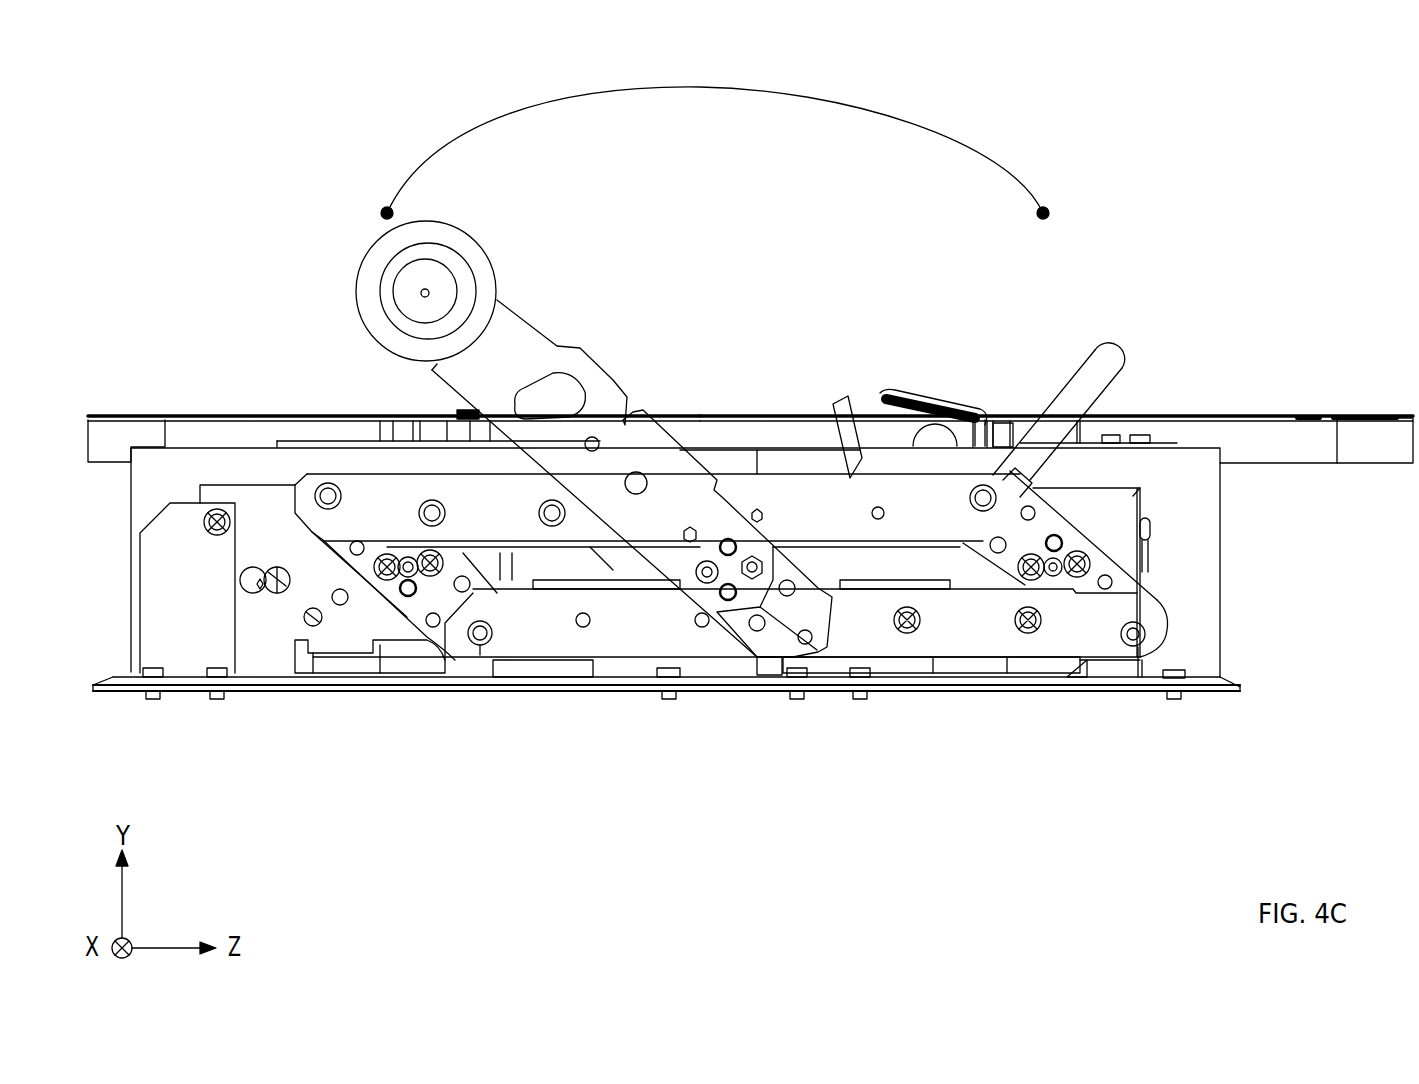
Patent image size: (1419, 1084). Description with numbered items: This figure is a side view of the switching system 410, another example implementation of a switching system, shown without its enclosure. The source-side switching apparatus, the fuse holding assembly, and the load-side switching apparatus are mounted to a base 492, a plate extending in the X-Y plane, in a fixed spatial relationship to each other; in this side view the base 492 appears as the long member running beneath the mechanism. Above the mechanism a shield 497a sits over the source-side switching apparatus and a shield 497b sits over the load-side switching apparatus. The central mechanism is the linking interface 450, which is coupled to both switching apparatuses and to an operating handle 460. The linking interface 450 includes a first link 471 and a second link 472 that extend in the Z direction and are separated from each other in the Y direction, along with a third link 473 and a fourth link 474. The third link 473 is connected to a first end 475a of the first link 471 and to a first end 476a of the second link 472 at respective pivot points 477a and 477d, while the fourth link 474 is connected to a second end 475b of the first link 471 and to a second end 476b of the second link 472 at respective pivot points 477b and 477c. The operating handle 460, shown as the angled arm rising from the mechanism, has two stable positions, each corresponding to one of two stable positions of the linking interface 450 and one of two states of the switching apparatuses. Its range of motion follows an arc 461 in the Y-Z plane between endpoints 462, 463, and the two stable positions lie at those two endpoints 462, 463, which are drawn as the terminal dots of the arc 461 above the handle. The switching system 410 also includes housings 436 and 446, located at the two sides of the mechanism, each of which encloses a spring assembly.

The switching system 410 is at (1332, 225).
The housing 436 is at (1123, 503).
The housing 446 is at (281, 605).
The linking interface 450 is at (728, 665).
The operating handle 460 is at (582, 372).
The arc 461 is at (621, 76).
The endpoint 462 is at (1043, 233).
The endpoint 463 is at (370, 200).
The first link 471 is at (762, 488).
The second link 472 is at (952, 627).
The third link 473 is at (422, 605).
The fourth link 474 is at (1113, 570).
The first end of the first link 475a is at (303, 493).
The second end of the first link 475b is at (1003, 502).
The first end of the second link 476a is at (463, 645).
The second end of the second link 476b is at (1162, 632).
The pivot point 477a is at (327, 486).
The pivot point 477b is at (982, 495).
The pivot point 477c is at (1132, 640).
The pivot point 477d is at (487, 640).
The base 492 is at (1223, 680).
The shield 497a is at (1395, 415).
The shield 497b is at (233, 415).